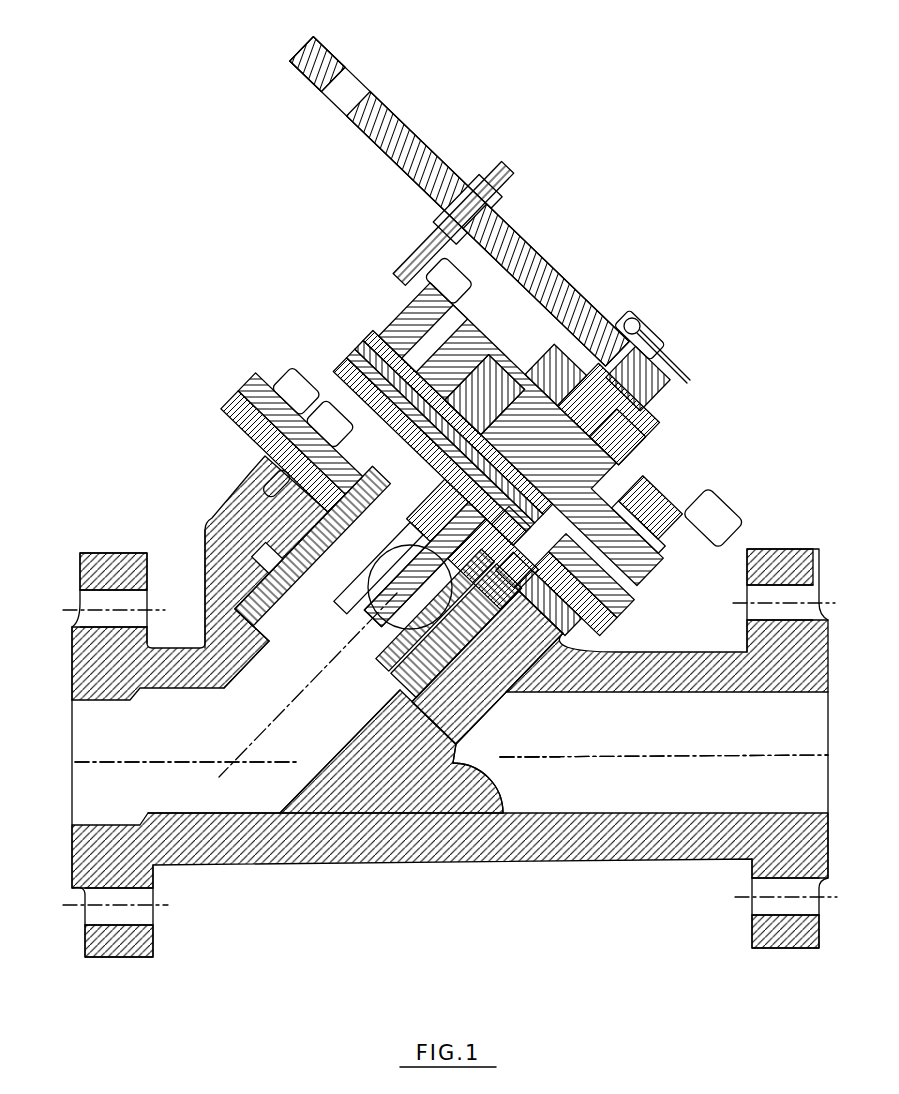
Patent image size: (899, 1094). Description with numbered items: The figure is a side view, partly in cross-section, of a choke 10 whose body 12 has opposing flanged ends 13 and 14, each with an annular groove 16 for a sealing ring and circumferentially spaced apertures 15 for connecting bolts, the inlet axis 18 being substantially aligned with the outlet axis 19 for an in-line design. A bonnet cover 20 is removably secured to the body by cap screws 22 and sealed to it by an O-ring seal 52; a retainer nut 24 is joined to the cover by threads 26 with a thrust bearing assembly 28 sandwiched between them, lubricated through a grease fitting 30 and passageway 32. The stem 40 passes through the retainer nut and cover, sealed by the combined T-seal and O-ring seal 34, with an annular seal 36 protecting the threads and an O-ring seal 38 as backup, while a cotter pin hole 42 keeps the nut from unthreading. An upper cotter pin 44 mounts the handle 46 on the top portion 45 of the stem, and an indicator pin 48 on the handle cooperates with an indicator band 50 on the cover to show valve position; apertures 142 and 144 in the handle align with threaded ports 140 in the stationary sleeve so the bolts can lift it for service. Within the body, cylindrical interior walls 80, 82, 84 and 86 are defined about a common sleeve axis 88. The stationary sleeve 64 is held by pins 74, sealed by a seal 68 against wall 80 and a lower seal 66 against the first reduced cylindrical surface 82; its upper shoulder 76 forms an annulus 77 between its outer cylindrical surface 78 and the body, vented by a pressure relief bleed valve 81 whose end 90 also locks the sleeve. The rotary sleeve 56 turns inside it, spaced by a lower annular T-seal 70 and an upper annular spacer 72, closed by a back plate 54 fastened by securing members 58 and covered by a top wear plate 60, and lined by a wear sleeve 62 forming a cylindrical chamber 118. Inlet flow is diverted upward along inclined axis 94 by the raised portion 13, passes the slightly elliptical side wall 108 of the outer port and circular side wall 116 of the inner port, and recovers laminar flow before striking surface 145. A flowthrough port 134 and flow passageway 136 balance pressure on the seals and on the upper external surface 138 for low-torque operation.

The choke 10 is at (215, 1033).
The body 12 is at (615, 862).
The flanged end 13 is at (457, 810).
The flanged end 14 is at (85, 675).
The apertures 15 is at (90, 603).
The annular groove 16 is at (72, 878).
The inlet axis 18 is at (730, 757).
The outlet axis 19 is at (133, 762).
The bonnet cover 20 is at (440, 340).
The cap screws 22 is at (710, 520).
The retainer nut 24 is at (617, 427).
The threads 26 is at (497, 387).
The thrust bearing assembly 28 is at (510, 520).
The grease fitting 30 is at (637, 473).
The passageway 32 is at (640, 505).
The combined T-seal and O-ring seal 34 is at (430, 345).
The annular seal 36 is at (555, 375).
The O-ring seal 38 is at (617, 407).
The stem 40 is at (655, 343).
The cotter pin hole 42 is at (630, 380).
The upper cotter pin 44 is at (624, 316).
The top portion 45 is at (640, 325).
The handle 46 is at (560, 283).
The indicator pin 48 is at (468, 200).
The indicator band 50 is at (430, 292).
The O-ring seal 52 is at (410, 390).
The back plate 54 is at (465, 515).
The rotary sleeve 56 is at (407, 673).
The securing members 58 is at (630, 555).
The top wear plate 60 is at (446, 530).
The wear sleeve 62 is at (292, 613).
The stationary sleeve 64 is at (527, 633).
The lower seal 66 is at (447, 735).
The seal 68 is at (605, 623).
The lower annular T-seal 70 is at (400, 720).
The upper annular spacer 72 is at (512, 568).
The pins 74 is at (450, 755).
The upper shoulder 76 is at (318, 475).
The annulus 77 is at (308, 440).
The outer cylindrical surface 78 is at (490, 673).
The cylindrical interior wall 80 is at (250, 473).
The pressure relief bleed valve 81 is at (250, 425).
The first reduced cylindrical surface 82 is at (267, 560).
The second restricted cylindrical surface 84 is at (215, 595).
The cylindrical wall 86 is at (245, 660).
The sleeve axis 88 is at (278, 712).
The end 90 is at (310, 513).
The inclined axis 94 is at (555, 745).
The annular side wall 108 is at (372, 583).
The side wall 116 is at (415, 615).
The cylindrical chamber 118 is at (304, 680).
The flowthrough port 134 is at (410, 587).
The flow passageway 136 is at (393, 423).
The upper external surface 138 is at (372, 370).
The threaded ports 140 is at (375, 380).
The aperture 142 is at (495, 215).
The aperture 144 is at (352, 65).
The surface 145 is at (250, 812).